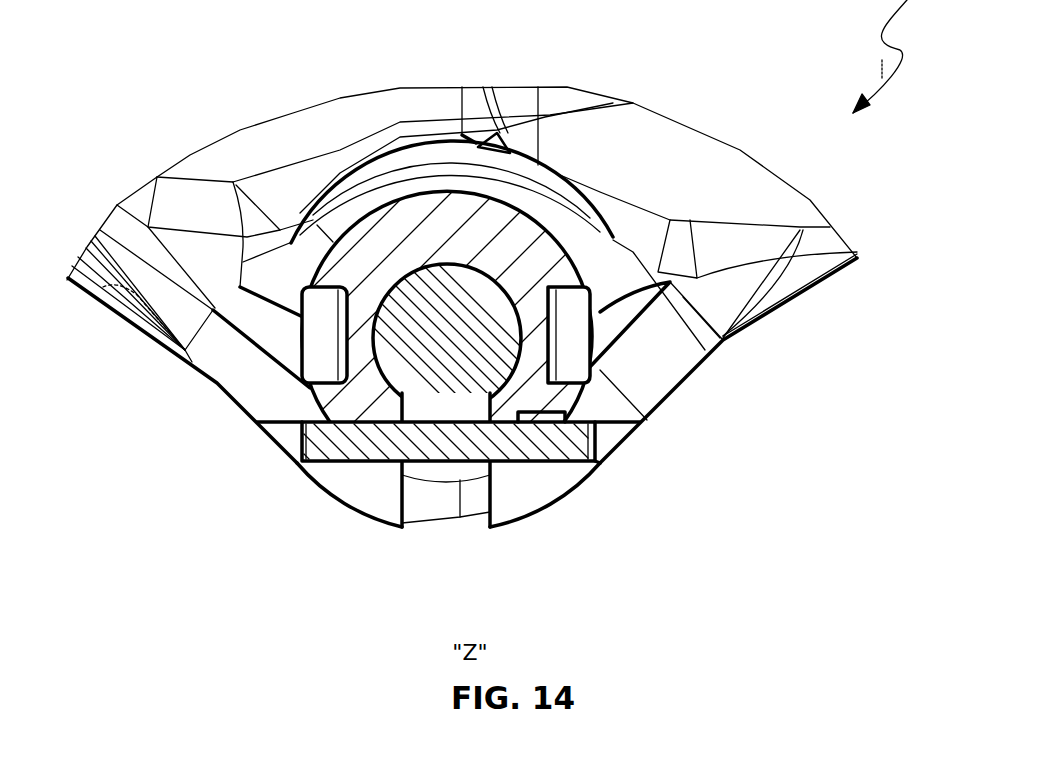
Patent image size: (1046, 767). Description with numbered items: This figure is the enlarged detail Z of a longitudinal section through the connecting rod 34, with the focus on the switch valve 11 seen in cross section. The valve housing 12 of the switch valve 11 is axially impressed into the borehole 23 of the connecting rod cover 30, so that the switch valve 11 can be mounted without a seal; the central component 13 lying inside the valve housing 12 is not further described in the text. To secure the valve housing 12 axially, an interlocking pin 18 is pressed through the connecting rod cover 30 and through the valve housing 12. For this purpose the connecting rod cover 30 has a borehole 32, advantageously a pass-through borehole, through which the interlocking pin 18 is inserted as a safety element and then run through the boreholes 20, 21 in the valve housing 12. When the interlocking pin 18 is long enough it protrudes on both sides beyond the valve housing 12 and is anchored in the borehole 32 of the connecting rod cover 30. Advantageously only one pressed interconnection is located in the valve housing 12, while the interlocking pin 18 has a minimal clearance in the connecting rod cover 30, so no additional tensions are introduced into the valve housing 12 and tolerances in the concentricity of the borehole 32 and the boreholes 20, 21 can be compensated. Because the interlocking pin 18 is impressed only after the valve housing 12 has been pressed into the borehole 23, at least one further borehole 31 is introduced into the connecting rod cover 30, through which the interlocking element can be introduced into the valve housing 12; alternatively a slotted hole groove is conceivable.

The switch valve 11 is at (583, 397).
The valve housing 12 is at (333, 400).
The shaft 13 is at (437, 277).
The interlocking pin 18 is at (422, 443).
The borehole 20 is at (505, 455).
The borehole 21 is at (395, 470).
The borehole 23 is at (600, 365).
The connecting rod cover 30 is at (800, 213).
The borehole 31 is at (473, 503).
The borehole 32 is at (603, 447).
The connecting rod 34 is at (724, 150).